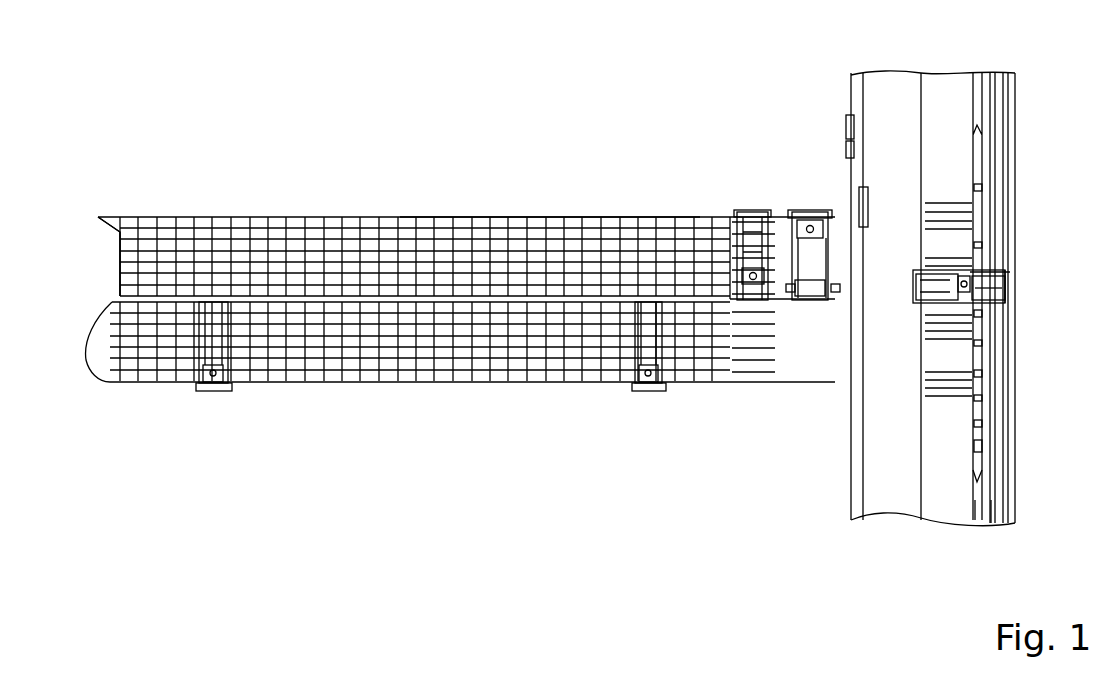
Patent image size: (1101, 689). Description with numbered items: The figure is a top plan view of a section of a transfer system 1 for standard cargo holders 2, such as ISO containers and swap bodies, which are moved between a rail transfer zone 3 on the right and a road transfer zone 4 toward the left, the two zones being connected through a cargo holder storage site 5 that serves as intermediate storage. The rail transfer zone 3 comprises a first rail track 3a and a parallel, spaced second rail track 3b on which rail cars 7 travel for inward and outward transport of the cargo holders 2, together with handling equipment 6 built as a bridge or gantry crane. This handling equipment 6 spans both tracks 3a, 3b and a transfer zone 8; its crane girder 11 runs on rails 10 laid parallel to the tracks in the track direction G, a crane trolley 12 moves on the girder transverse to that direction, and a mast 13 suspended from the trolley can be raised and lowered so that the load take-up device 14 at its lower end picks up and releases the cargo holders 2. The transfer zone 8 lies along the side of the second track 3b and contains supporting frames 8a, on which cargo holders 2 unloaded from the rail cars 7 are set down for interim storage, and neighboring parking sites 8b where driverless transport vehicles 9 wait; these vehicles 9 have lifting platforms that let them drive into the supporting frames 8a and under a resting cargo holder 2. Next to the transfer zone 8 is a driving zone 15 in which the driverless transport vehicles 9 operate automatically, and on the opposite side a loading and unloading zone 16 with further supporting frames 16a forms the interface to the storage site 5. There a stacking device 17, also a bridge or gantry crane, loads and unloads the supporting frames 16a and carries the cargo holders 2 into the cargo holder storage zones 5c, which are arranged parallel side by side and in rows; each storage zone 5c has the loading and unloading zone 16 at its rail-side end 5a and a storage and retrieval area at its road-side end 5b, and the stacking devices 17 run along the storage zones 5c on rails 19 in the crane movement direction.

The transfer system 1 is at (571, 28).
The standard cargo holders 2 is at (612, 222).
The rail transfer zone 3 is at (990, 140).
The first rail track 3a is at (993, 520).
The second rail track 3b is at (980, 525).
The road transfer zone 4 is at (92, 118).
The cargo holder storage site 5 is at (415, 176).
The rail-side end 5a is at (717, 217).
The road-side end 5b is at (100, 222).
The cargo holder storage zones 5c is at (532, 217).
The handling equipment 6 is at (968, 279).
The rail cars 7 is at (985, 438).
The transfer zone 8 is at (950, 420).
The supporting frames 8a is at (972, 322).
The parking sites 8b is at (952, 355).
The driverless transport vehicles 9 is at (851, 112).
The rails 10 is at (921, 110).
The crane girder 11 is at (998, 275).
The crane trolley 12 is at (1013, 298).
The mast 13 is at (970, 285).
The load take-up device 14 is at (972, 273).
The driving zone 15 is at (895, 413).
The loading and unloading zone 16 is at (788, 358).
The supporting frames 16a is at (748, 382).
The stacking device 17 is at (810, 212).
The rails 19 is at (422, 303).
The track direction G is at (980, 0).